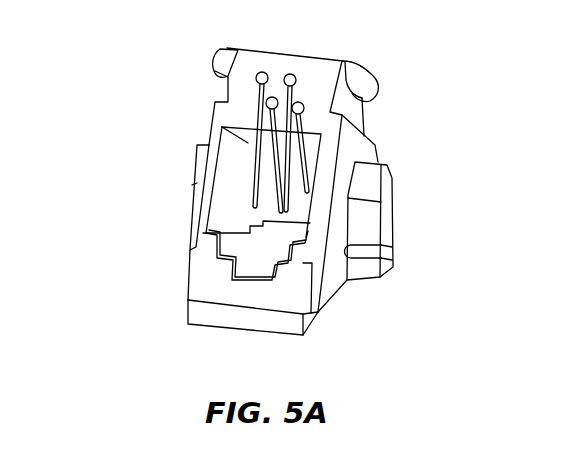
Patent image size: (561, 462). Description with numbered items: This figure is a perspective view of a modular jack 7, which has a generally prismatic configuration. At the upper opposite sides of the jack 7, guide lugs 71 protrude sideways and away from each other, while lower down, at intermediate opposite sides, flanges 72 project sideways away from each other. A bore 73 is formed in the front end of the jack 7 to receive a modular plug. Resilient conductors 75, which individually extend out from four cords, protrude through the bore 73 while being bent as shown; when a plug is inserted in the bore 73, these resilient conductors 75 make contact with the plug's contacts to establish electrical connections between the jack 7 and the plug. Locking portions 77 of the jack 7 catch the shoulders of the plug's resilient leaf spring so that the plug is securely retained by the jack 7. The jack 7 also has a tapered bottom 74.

The modular jack 7 is at (313, 55).
The guide lugs 71 is at (213, 57).
The flanges 72 is at (192, 185).
The bore 73 is at (218, 217).
The tapered bottom 74 is at (336, 293).
The resilient conductors 75 is at (320, 162).
The locking portions 77 is at (273, 230).